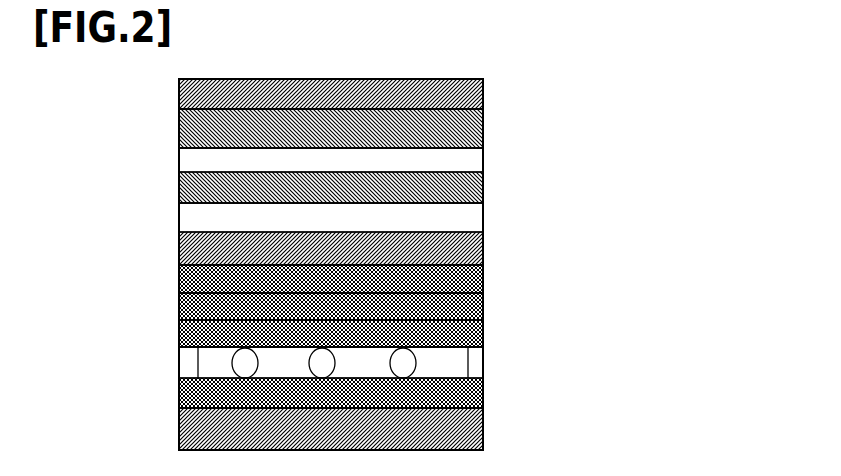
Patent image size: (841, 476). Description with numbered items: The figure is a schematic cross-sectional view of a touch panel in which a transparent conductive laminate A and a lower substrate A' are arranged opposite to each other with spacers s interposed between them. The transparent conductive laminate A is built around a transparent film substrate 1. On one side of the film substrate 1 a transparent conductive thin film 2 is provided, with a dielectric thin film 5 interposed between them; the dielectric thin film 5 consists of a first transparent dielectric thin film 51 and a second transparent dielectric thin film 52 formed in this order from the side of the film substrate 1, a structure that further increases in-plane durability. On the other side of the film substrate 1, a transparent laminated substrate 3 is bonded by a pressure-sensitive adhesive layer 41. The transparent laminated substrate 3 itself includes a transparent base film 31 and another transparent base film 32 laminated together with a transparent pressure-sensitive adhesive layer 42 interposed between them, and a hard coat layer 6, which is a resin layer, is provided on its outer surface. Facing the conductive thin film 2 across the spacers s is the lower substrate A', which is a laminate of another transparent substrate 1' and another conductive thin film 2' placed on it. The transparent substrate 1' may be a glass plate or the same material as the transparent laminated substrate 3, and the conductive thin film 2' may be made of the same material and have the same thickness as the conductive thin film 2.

The hard coat layer 6 is at (483, 97).
The transparent laminated substrate 3 is at (416, 156).
The transparent base film 32 is at (483, 129).
The transparent pressure-sensitive adhesive layer 42 is at (458, 163).
The transparent base film 31 is at (483, 193).
The pressure-sensitive adhesive layer 41 is at (465, 221).
The transparent film substrate 1 is at (384, 248).
The dielectric thin film 5 is at (416, 293).
The first transparent dielectric thin film 51 is at (483, 284).
The second transparent dielectric thin film 52 is at (483, 309).
The transparent conductive thin film 2 is at (383, 333).
The spacers s is at (403, 365).
The conductive thin film 2' is at (386, 391).
The transparent substrate 1' is at (388, 429).
The transparent conductive laminate A is at (463, 210).
The lower substrate A' is at (421, 412).